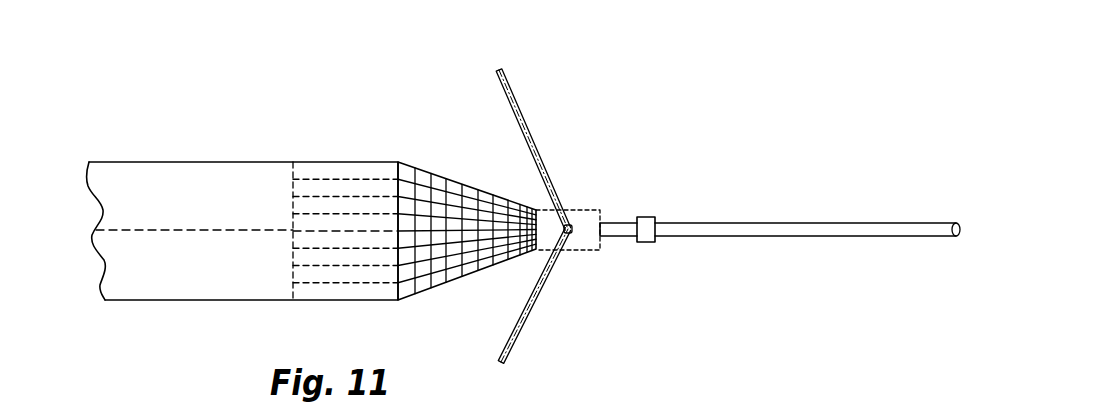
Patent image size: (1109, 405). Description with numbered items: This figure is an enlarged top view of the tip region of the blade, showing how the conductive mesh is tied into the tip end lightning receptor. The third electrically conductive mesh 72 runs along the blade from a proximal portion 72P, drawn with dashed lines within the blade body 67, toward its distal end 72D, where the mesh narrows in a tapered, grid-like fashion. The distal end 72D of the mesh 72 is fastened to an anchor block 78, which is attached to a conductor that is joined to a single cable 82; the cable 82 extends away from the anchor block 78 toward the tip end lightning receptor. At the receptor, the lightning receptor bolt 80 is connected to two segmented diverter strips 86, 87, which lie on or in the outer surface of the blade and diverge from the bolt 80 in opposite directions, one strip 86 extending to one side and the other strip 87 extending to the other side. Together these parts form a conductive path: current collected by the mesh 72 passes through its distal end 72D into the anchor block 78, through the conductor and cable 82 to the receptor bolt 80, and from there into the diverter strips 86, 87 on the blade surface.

The catheter/sheath body 67 is at (147, 187).
The third electrically conductive mesh 72 is at (414, 214).
The proximal portion of stent 72P is at (332, 188).
The distal end of the third electrically conductive mesh 72D is at (447, 265).
The anchor block 78 is at (587, 215).
The lightning receptor bolt 80 is at (570, 210).
The cable 82 is at (758, 224).
The segmented diverter strip 86 is at (537, 150).
The segmented diverter strip 87 is at (528, 310).